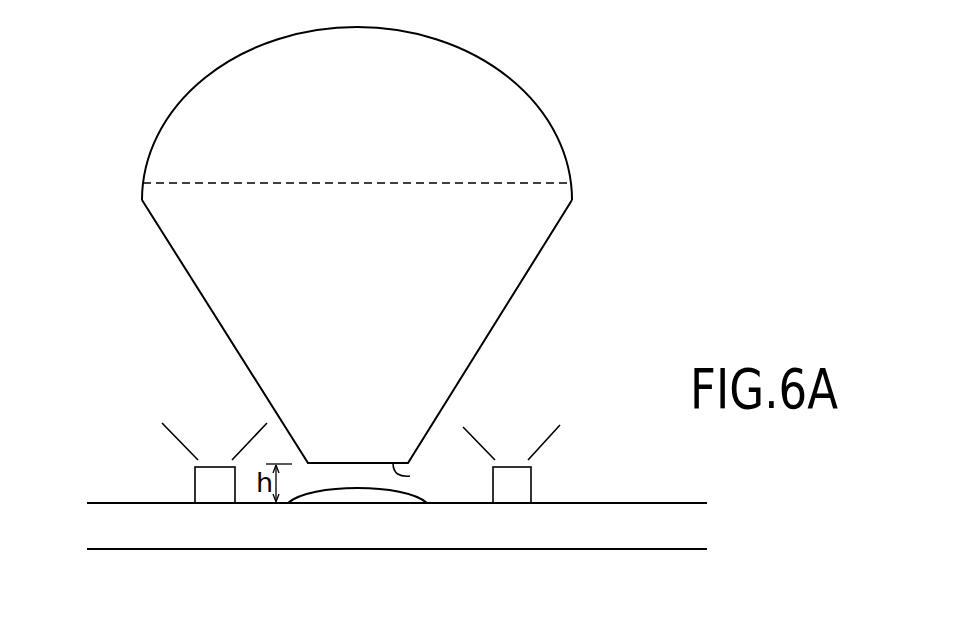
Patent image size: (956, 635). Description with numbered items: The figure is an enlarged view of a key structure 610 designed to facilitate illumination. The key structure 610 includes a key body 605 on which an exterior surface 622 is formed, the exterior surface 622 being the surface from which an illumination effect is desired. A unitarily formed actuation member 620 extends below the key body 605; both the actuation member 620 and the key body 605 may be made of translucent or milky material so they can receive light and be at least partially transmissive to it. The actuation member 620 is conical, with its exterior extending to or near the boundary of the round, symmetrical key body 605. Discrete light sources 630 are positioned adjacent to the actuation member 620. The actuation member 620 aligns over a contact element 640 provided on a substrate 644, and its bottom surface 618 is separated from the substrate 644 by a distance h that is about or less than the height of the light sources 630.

The key structure 610 is at (387, 245).
The key body 605 is at (339, 113).
The exterior surface 622 is at (192, 88).
The actuation member 620 is at (377, 322).
The light sources 630 is at (213, 467).
The contact element 640 is at (412, 491).
The bottom surface 618 is at (410, 476).
The substrate 644 is at (617, 541).